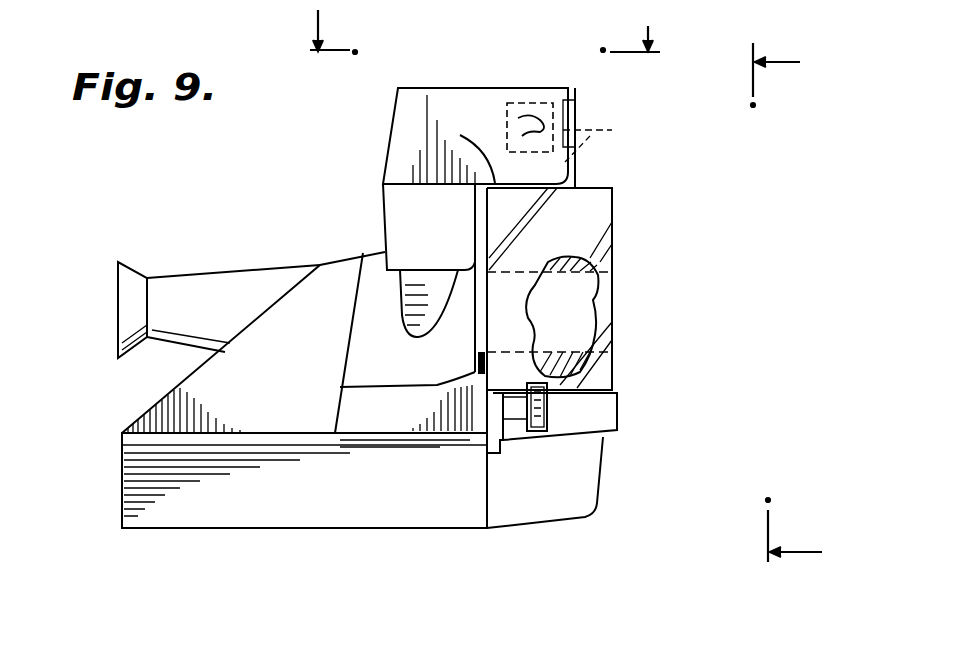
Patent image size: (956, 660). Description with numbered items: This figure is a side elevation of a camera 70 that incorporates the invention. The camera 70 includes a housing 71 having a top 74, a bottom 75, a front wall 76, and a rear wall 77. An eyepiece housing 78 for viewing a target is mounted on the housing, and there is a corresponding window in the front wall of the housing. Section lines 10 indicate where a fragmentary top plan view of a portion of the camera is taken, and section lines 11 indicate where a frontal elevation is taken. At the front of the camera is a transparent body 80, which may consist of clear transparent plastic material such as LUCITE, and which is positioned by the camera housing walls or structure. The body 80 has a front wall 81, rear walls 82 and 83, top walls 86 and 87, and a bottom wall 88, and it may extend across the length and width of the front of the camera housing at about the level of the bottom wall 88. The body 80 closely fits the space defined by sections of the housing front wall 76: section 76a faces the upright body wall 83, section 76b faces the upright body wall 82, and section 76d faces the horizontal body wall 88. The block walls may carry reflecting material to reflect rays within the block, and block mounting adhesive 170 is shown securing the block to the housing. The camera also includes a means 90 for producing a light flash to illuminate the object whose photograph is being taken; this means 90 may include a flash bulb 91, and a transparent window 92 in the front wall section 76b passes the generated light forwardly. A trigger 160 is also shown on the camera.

The section lines 10— 10 is at (485, 31).
The section lines 11— 11 is at (794, 302).
The camera 70 is at (312, 194).
The housing 71 is at (235, 490).
The top 74 is at (432, 88).
The bottom 75 is at (395, 530).
The front wall 76 is at (480, 343).
The front wall section 76a is at (530, 213).
The front wall section 76b is at (563, 97).
The front wall section 76d is at (607, 392).
The rear wall 77 is at (122, 447).
The eyepiece housing 78 is at (133, 293).
The transparent body 80 is at (626, 205).
The front wall 81 is at (614, 250).
The rear wall 82 is at (570, 163).
The rear wall 83 is at (477, 233).
The top wall 86 is at (467, 150).
The top wall 87 is at (600, 88).
The bottom wall 88 is at (588, 395).
The means for producing a light flash 90 is at (507, 117).
The flash bulb 91 is at (535, 120).
The transparent window 92 is at (612, 130).
The trigger 160 is at (548, 440).
The block mounting adhesive 170 is at (437, 388).